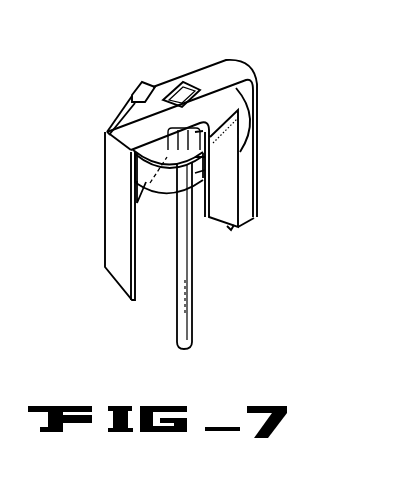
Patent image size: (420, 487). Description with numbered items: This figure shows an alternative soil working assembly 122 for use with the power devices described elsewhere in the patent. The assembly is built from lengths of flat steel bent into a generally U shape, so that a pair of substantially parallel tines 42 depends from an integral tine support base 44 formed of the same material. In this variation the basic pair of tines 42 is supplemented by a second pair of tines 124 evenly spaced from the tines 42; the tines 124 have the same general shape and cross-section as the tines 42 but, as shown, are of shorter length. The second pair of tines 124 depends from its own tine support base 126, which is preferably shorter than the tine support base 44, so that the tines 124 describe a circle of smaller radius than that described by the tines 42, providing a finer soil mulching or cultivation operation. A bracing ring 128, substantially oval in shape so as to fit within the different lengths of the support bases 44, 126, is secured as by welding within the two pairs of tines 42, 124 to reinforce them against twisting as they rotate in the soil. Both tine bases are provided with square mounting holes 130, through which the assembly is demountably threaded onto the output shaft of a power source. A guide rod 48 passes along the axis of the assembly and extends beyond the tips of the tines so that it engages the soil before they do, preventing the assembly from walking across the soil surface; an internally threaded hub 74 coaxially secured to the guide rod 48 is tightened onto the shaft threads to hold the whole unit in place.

The soil working assembly 122 is at (203, 157).
The tine support base 44 is at (182, 115).
The tines 42 is at (112, 251).
The tine support base 126 is at (212, 112).
The square mounting holes 130 is at (172, 112).
The bracing ring 128 is at (143, 170).
The second pair of tines 124 is at (143, 192).
The internally threaded hub 74 is at (206, 157).
The guide rod 48 is at (188, 318).